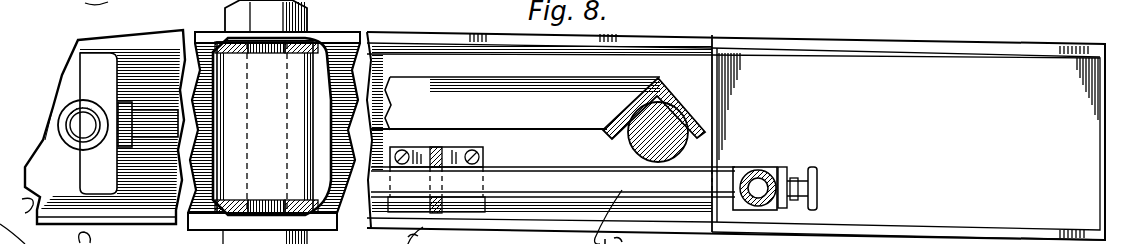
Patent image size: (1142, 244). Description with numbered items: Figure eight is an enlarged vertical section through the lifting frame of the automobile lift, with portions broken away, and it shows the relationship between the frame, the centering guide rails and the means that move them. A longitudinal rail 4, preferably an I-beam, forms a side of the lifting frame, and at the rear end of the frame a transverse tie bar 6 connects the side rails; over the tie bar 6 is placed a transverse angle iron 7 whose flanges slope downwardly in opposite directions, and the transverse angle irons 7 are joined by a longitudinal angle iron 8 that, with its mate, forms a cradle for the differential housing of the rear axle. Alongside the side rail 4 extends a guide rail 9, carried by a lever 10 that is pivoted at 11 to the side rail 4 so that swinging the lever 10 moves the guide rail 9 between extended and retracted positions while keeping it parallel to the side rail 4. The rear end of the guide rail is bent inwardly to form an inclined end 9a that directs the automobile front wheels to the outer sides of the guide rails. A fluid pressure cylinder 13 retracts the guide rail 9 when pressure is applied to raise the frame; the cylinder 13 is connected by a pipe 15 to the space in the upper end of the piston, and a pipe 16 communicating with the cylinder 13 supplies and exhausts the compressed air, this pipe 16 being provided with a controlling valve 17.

The longitudinal rail 4 is at (216, 32).
The transverse tie bar 6 is at (633, 145).
The transverse angle iron 7 is at (687, 103).
The longitudinal angle iron 8 is at (528, 140).
The guide rail 9 is at (330, 38).
The inclined end of guide rail 9a is at (933, 63).
The lever 10 is at (257, 128).
The pivot 11 is at (80, 2).
The fluid pressure cylinder 13 is at (40, 150).
The pipe 15 is at (85, 136).
The pipe 16 is at (158, 140).
The controlling valve 17 is at (817, 183).